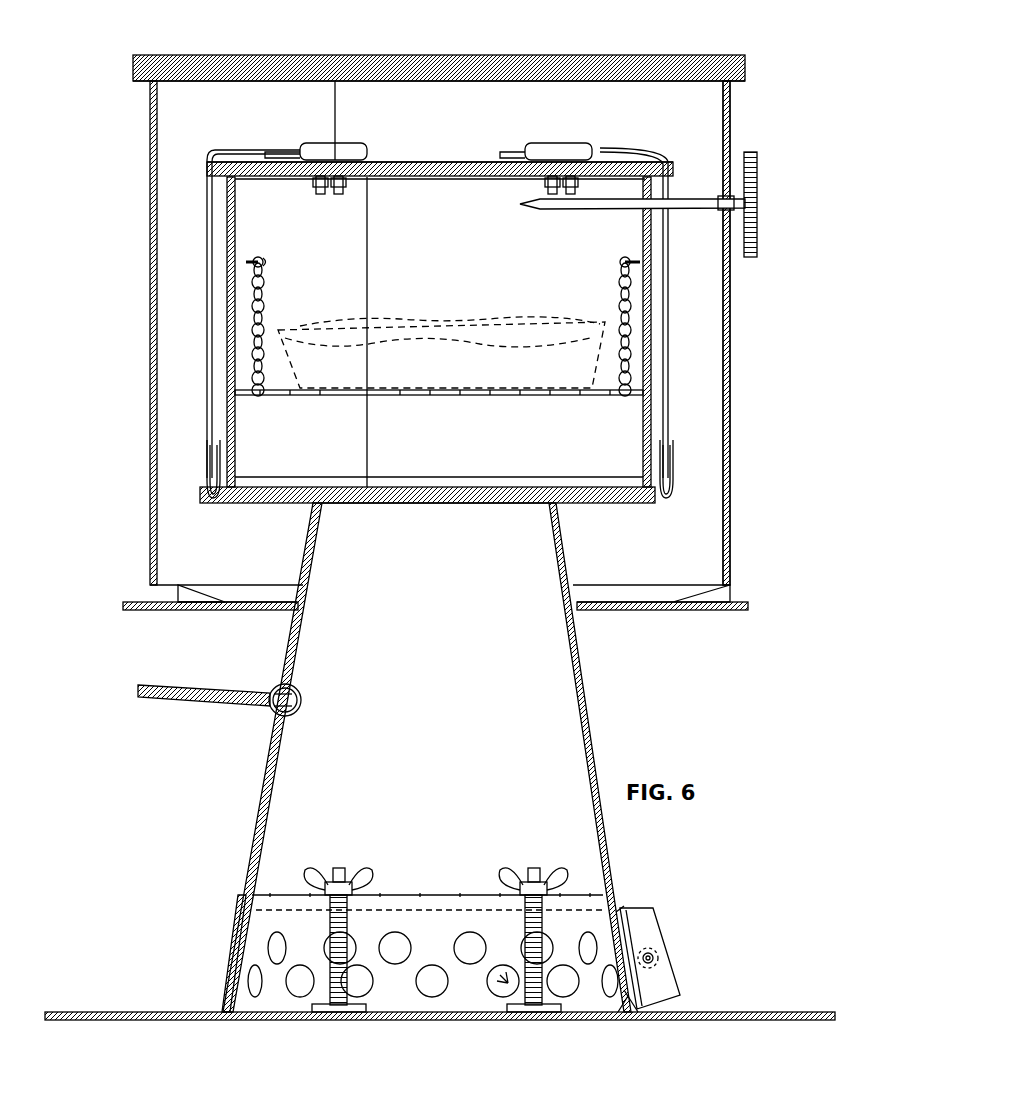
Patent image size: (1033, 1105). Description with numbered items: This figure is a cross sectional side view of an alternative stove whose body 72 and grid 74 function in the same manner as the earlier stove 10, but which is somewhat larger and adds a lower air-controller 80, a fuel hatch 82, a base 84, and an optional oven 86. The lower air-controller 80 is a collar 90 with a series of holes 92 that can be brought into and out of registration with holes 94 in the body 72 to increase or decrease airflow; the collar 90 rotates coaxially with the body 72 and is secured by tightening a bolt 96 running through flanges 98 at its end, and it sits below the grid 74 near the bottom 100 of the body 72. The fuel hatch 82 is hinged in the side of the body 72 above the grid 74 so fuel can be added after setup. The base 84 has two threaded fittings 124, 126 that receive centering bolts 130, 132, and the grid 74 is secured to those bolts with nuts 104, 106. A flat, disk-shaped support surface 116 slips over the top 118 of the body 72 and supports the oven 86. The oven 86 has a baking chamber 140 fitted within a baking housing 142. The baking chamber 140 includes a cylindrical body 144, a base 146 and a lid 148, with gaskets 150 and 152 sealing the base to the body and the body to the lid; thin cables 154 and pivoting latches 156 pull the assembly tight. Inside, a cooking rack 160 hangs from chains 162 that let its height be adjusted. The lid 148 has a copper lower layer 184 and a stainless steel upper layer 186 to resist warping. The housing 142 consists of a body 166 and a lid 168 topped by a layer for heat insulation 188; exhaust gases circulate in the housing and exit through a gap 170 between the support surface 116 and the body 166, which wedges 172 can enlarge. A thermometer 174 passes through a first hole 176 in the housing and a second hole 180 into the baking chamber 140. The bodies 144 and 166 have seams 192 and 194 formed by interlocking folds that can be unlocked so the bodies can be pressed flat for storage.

The stove 10 is at (180, 806).
The body 72 is at (594, 766).
The grid 74 is at (437, 893).
The lower air-controller 80 is at (668, 918).
The fuel hatch 82 is at (238, 708).
The base 84 is at (132, 1014).
The oven 86 is at (133, 213).
The collar 90 is at (236, 966).
The holes 92 is at (497, 990).
The holes 94 is at (507, 990).
The bolt 96 is at (656, 956).
The flanges 98 is at (660, 985).
The bottom 100 is at (299, 698).
The nut 104 is at (322, 875).
The nut 106 is at (558, 876).
The support surface 116 is at (712, 610).
The top 118 is at (548, 505).
The threaded fitting 124 is at (326, 1012).
The threaded fitting 126 is at (540, 1012).
The centering bolt 130 is at (348, 925).
The centering bolt 132 is at (523, 924).
The baking chamber 140 is at (452, 448).
The baking housing 142 is at (741, 414).
The cylindrical body 144 is at (642, 470).
The base 146 is at (468, 488).
The lid 148 is at (423, 160).
The gasket 150 is at (308, 480).
The gasket 152 is at (338, 196).
The thin cables 154 is at (215, 400).
The latches 156 is at (325, 148).
The cooking rack 160 is at (305, 398).
The chains 162 is at (266, 300).
The body 166 is at (731, 362).
The lid 168 is at (587, 62).
The gap 170 is at (265, 604).
The wedges 172 is at (203, 596).
The thermometer 174 is at (758, 200).
The first hole 176 is at (720, 212).
The second hole 180 is at (642, 208).
The copper lower layer 184 is at (470, 181).
The stainless steel upper layer 186 is at (470, 160).
The layer for heat insulation 188 is at (648, 58).
The seam 192 is at (370, 265).
The seam 194 is at (337, 105).